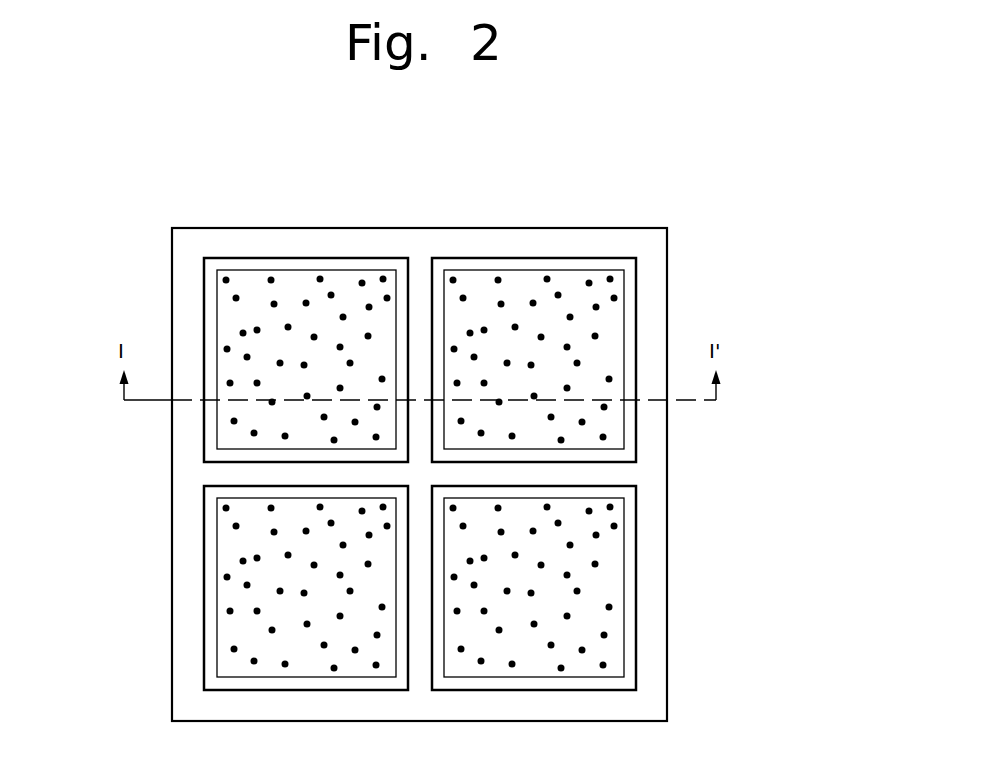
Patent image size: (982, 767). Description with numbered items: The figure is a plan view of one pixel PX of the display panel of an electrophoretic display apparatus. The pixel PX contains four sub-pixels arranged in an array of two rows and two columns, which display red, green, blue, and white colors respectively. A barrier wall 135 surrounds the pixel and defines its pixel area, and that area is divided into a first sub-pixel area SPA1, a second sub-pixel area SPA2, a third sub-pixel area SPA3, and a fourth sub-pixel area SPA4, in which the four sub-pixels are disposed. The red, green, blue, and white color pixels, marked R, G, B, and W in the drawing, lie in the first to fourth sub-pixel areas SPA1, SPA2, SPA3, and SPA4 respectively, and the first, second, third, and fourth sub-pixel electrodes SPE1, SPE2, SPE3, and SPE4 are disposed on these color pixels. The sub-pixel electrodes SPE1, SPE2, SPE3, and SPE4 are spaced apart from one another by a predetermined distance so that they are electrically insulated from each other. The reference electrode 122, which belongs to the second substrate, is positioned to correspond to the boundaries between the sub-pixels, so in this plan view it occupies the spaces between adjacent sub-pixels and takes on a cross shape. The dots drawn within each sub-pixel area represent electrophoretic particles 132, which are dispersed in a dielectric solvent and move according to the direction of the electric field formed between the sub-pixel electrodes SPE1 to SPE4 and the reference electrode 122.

The pixel PX is at (568, 227).
The barrier wall 135 is at (501, 240).
The reference electrode 122 is at (422, 280).
The electrophoretic particles 132 is at (270, 278).
The first sub-pixel electrode SPE1 is at (216, 423).
The second sub-pixel electrode SPE2 is at (624, 297).
The third sub-pixel electrode SPE3 is at (624, 639).
The fourth sub-pixel electrode SPE4 is at (216, 629).
The first sub-pixel area SPA1 is at (233, 317).
The second sub-pixel area SPA2 is at (608, 418).
The third sub-pixel area SPA3 is at (608, 577).
The fourth sub-pixel area SPA4 is at (233, 541).